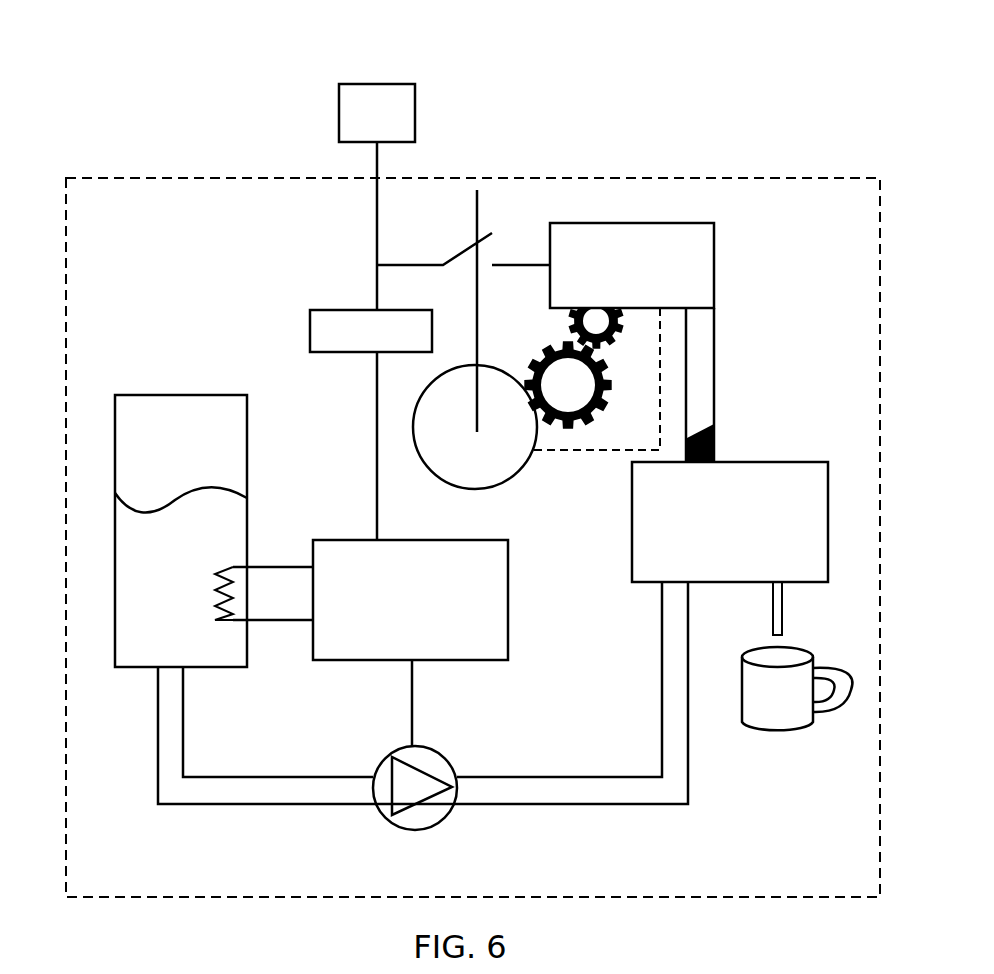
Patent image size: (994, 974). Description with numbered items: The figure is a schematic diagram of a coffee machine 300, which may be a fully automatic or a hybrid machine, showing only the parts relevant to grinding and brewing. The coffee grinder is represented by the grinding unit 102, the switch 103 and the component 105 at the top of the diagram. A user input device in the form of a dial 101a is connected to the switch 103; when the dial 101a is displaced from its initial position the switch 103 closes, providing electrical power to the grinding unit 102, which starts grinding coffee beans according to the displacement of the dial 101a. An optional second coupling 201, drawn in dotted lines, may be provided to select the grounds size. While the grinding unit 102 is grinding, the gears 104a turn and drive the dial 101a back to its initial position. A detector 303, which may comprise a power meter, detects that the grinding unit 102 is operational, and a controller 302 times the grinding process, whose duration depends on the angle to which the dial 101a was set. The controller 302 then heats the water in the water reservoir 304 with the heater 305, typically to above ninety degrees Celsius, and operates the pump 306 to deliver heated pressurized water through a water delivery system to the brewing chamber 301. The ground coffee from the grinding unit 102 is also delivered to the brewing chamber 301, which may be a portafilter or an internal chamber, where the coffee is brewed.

The coffee machine 300 is at (243, 178).
The coffee grinder component 105 is at (377, 84).
The switch 103 is at (453, 252).
The grinding unit 102 is at (650, 222).
The gears 104a is at (615, 385).
The dial 101a is at (522, 470).
The second coupling 201 is at (612, 452).
The brewing chamber 301 is at (777, 462).
The detector 303 is at (310, 328).
The water reservoir 304 is at (157, 393).
The heater 305 is at (275, 567).
The controller 302 is at (482, 660).
The pump 306 is at (412, 833).